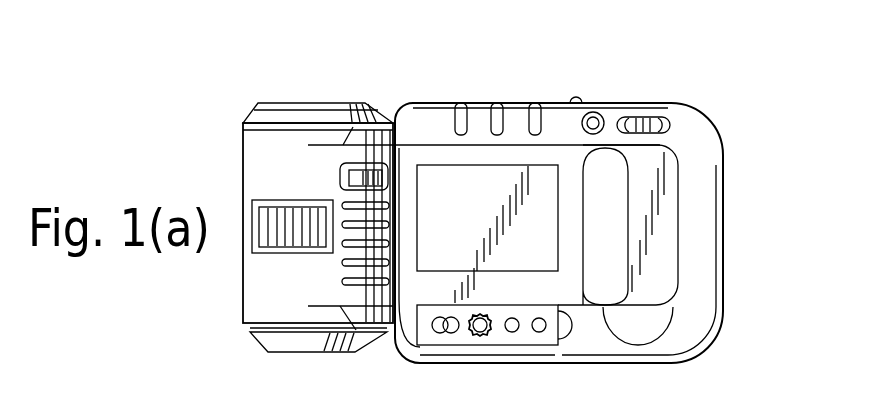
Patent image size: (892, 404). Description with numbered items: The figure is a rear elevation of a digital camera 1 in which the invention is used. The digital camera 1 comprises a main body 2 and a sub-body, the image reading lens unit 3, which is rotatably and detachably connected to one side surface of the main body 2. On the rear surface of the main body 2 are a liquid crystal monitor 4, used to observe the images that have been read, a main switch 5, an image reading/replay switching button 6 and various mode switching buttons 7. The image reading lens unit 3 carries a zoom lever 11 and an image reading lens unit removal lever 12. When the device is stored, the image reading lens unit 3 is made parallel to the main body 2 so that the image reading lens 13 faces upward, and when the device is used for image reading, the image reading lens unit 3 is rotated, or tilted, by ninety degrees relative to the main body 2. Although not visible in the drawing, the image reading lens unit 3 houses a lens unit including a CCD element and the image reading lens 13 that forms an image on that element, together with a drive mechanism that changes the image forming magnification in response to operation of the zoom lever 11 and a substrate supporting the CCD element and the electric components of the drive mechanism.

The digital camera 1 is at (704, 94).
The main body 2 is at (715, 140).
The image reading lens unit 3 is at (257, 297).
The liquid crystal monitor 4 is at (437, 183).
The main switch 5 is at (594, 112).
The image reading/replay switching button 6 is at (649, 117).
The mode switching buttons 7 is at (537, 123).
The zoom lever 11 is at (290, 203).
The image reading lens unit removal lever 12 is at (377, 166).
The image reading lens 13 is at (327, 108).